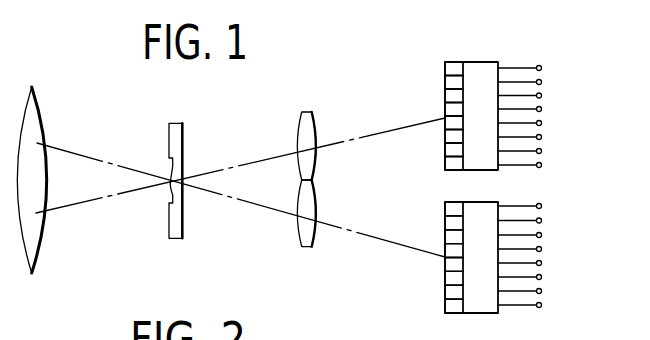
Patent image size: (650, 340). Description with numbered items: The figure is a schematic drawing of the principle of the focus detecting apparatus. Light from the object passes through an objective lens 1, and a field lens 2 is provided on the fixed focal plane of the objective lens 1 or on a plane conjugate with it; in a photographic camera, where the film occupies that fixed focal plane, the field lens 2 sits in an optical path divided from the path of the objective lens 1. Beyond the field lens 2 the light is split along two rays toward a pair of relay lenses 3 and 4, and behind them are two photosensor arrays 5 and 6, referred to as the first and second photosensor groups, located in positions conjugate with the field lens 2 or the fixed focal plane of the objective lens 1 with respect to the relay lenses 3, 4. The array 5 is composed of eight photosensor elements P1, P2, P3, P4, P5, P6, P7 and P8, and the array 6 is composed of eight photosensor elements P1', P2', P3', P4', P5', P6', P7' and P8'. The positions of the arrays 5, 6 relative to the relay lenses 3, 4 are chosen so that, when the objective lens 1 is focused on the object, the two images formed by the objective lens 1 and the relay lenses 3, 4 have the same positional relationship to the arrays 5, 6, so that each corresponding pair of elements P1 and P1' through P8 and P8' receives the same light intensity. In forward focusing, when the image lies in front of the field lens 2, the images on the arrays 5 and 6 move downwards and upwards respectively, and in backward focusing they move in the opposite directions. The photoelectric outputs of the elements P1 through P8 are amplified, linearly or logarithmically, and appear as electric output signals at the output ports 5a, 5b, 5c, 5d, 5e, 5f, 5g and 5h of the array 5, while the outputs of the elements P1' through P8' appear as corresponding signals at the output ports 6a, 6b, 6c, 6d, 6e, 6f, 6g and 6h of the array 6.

The objective lens 1 is at (34, 255).
The field lens 2 is at (176, 193).
The relay lens 3 is at (312, 120).
The relay lens 4 is at (308, 232).
The photosensor array 5 is at (477, 62).
The photosensor array 6 is at (473, 313).
The output port 5a is at (542, 68).
The output port 5b is at (542, 82).
The output port 5c is at (542, 96).
The output port 5d is at (542, 109).
The output port 5e is at (542, 123).
The output port 5f is at (542, 137).
The output port 5g is at (542, 151).
The output port 5h is at (542, 165).
The output port 6a is at (542, 206).
The output port 6b is at (542, 220).
The output port 6c is at (542, 235).
The output port 6d is at (542, 249).
The output port 6e is at (542, 263).
The output port 6f is at (542, 277).
The output port 6g is at (542, 291).
The output port 6h is at (542, 305).
The photosensor element P1 is at (440, 50).
The photosensor element P2 is at (435, 69).
The photosensor element P3 is at (435, 88).
The photosensor element P4 is at (435, 106).
The photosensor element P5 is at (436, 132).
The photosensor element P6 is at (425, 144).
The photosensor element P7 is at (436, 159).
The photosensor element P8 is at (440, 176).
The photosensor element P1' is at (428, 200).
The photosensor element P2' is at (435, 215).
The photosensor element P3' is at (424, 227).
The photosensor element P4' is at (435, 242).
The photosensor element P5' is at (435, 270).
The photosensor element P6' is at (421, 283).
The photosensor element P7' is at (433, 293).
The photosensor element P8' is at (436, 315).